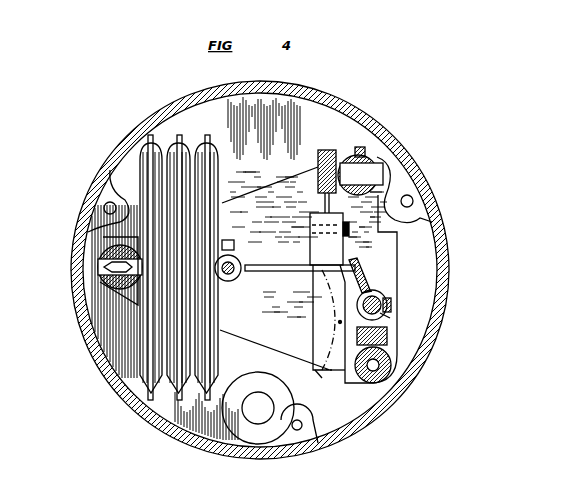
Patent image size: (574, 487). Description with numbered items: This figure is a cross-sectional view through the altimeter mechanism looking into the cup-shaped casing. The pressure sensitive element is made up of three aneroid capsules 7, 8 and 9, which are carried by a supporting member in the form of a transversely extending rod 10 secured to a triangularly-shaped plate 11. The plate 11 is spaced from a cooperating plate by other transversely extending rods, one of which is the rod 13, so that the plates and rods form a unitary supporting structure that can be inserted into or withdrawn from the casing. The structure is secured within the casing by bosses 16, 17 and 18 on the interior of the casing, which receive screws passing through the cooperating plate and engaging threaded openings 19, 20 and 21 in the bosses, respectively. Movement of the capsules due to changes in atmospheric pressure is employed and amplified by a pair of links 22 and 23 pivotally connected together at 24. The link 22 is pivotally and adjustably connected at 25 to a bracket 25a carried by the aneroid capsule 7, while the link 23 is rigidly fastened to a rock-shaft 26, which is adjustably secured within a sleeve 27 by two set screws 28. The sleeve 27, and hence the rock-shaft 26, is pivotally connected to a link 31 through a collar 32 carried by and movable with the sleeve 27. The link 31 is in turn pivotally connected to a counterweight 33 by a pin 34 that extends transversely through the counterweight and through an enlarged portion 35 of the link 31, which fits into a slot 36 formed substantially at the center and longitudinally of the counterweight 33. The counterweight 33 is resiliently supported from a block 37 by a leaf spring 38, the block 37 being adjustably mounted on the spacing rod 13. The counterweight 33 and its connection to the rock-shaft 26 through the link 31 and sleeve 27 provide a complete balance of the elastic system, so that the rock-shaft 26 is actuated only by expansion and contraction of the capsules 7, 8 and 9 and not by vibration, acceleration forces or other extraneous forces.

The aneroid capsule 7 is at (210, 142).
The aneroid capsule 8 is at (182, 142).
The aneroid capsule 9 is at (155, 142).
The transversely extending rod 10 is at (136, 250).
The triangularly-shaped plate 11 is at (248, 333).
The transversely extending rod 13 is at (372, 165).
The boss 16 is at (113, 195).
The boss 17 is at (414, 222).
The boss 18 is at (310, 418).
The threaded opening 19 is at (104, 208).
The threaded opening 20 is at (413, 200).
The threaded opening 21 is at (296, 430).
The link 22 is at (284, 272).
The link 23 is at (368, 276).
The pivotal connection 24 is at (350, 230).
The pivotal connection 25 is at (232, 280).
The bracket 25a is at (236, 258).
The rock-shaft 26 is at (390, 316).
The sleeve 27 is at (384, 298).
The set screw 28 is at (392, 305).
The link 31 is at (348, 352).
The collar 32 is at (380, 296).
The counterweight 33 is at (322, 360).
The pin 34 is at (338, 324).
The enlarged portion 35 is at (320, 375).
The slot 36 is at (322, 320).
The block 37 is at (336, 150).
The leaf spring 38 is at (324, 200).